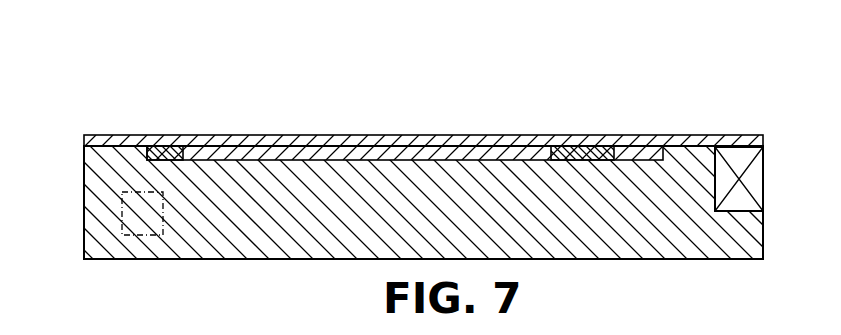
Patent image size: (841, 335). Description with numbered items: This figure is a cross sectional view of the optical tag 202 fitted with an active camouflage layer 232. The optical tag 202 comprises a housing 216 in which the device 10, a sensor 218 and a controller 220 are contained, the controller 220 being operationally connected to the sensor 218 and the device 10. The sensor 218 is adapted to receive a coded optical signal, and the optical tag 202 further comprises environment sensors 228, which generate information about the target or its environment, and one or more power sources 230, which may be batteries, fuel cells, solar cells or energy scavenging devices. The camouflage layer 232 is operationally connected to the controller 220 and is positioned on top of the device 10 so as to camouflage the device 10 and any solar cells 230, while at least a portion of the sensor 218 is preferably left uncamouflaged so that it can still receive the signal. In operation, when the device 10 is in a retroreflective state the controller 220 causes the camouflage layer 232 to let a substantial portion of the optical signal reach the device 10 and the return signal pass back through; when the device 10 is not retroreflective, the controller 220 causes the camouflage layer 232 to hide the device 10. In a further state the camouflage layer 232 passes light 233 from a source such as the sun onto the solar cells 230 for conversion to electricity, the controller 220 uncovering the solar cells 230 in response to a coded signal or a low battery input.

The optical tag 202 is at (100, 64).
The housing 216 is at (84, 191).
The controller 220 is at (122, 232).
The environment sensors 228 is at (167, 157).
The active camouflage layer 232 is at (265, 146).
The device 10 is at (362, 150).
The sensor 218 is at (571, 157).
The light 233 is at (644, 137).
The power sources 230 is at (763, 181).